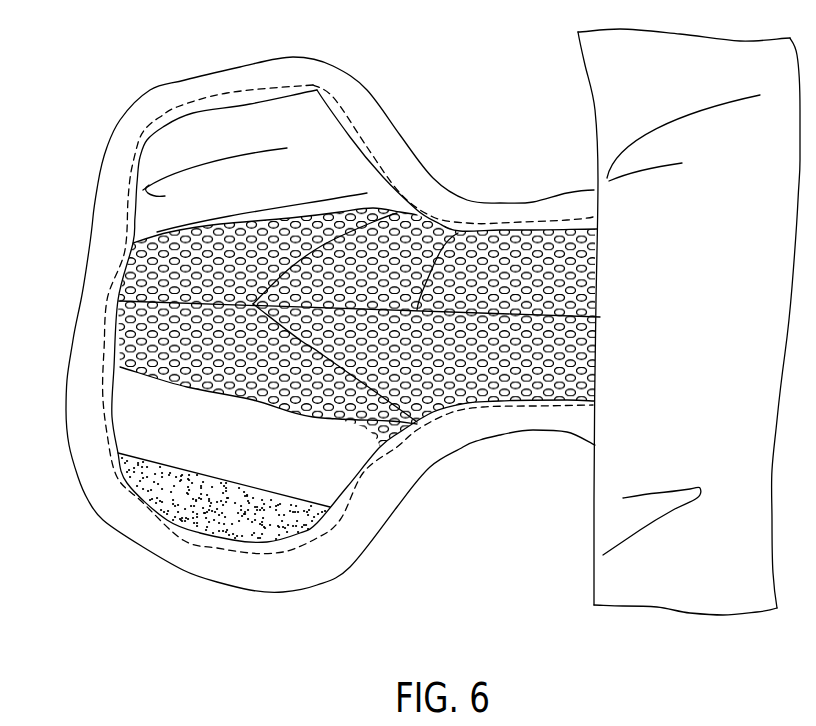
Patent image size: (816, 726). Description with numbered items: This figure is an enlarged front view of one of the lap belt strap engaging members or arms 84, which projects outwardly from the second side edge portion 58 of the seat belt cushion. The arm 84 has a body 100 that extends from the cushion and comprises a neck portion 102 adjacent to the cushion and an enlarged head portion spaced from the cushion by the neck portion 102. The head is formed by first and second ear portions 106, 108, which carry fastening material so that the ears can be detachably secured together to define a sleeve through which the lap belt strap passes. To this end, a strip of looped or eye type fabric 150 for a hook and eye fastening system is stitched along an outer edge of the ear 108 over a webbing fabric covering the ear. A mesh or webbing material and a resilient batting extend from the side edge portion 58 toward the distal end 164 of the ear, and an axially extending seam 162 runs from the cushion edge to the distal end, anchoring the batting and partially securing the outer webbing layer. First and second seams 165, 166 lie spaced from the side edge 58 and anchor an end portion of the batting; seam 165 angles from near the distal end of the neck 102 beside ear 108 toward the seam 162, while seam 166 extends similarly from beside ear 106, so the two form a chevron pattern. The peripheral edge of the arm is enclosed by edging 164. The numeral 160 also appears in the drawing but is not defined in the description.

The second side edge portion 58 is at (607, 478).
The second elongated lap belt strap engaging member or arm 84 is at (203, 568).
The body 100 is at (150, 212).
The neck portion 102 is at (513, 250).
The first ear portion 106 is at (220, 98).
The second ear portion 108 is at (197, 433).
The strip of looped or eye type fabric 150 is at (270, 530).
The side edge region 160 is at (76, 333).
The axially extending seam 162 is at (457, 229).
The distal end / edging 164 is at (83, 297).
The first seam 165 is at (337, 365).
The second seam 166 is at (342, 250).